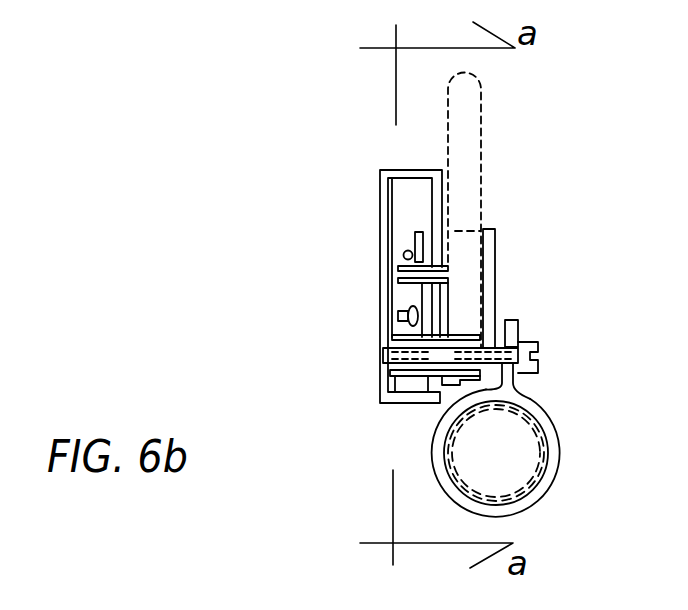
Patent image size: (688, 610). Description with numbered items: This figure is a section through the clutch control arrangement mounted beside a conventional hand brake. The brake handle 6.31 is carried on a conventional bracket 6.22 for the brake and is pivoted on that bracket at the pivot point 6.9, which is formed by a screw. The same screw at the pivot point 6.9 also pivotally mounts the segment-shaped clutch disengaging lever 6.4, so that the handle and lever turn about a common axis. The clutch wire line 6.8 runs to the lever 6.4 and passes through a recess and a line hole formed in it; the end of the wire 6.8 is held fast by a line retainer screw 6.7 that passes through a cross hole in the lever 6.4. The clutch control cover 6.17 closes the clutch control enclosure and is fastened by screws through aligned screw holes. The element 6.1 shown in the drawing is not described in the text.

The clutch control cover 6.17 is at (380, 200).
The brake handle 6.31 is at (483, 146).
The clutch wire line 6.8 is at (408, 250).
The contact plate 6.1 is at (398, 277).
The clutch disengaging lever 6.4 is at (398, 284).
The line retainer screw 6.7 is at (408, 316).
The pivot point 6.9 is at (390, 363).
The bracket 6.22 is at (553, 484).